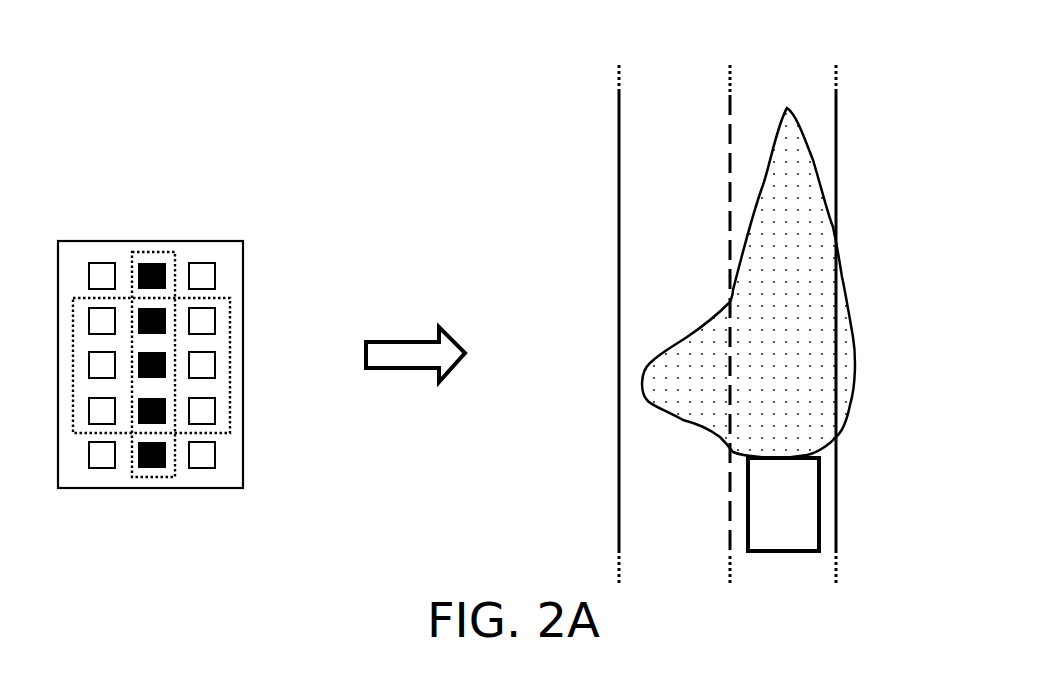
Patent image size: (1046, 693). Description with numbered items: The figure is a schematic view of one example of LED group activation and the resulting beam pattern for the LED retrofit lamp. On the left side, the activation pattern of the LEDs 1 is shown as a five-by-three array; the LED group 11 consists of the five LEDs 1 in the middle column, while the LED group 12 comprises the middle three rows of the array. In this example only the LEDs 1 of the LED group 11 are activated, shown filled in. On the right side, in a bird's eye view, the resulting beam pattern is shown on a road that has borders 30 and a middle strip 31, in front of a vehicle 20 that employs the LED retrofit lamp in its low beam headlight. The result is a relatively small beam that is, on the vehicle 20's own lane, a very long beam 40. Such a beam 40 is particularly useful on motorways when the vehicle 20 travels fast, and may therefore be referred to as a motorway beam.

The LED 1 is at (202, 263).
The LED group 11 is at (153, 250).
The LED group 12 is at (230, 363).
The vehicle 20 is at (820, 503).
The borders 30 is at (835, 299).
The middle strip 31 is at (730, 167).
The beam 40 is at (845, 280).